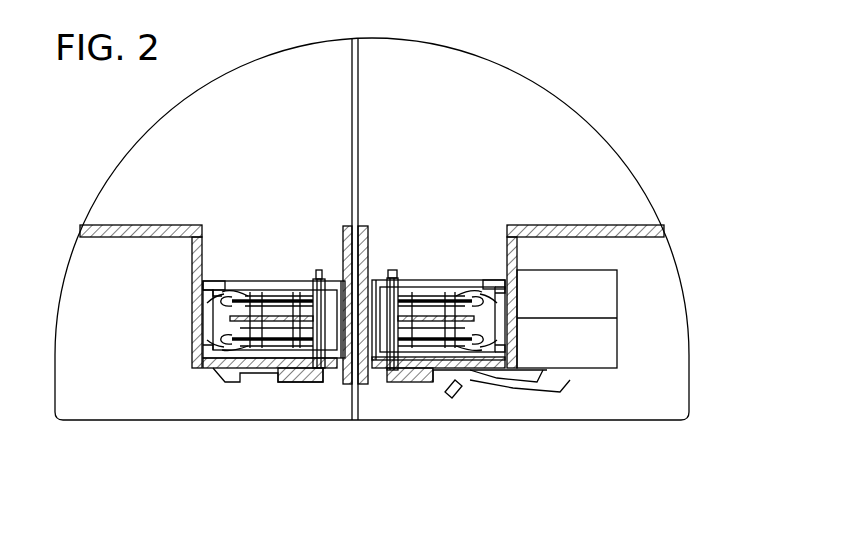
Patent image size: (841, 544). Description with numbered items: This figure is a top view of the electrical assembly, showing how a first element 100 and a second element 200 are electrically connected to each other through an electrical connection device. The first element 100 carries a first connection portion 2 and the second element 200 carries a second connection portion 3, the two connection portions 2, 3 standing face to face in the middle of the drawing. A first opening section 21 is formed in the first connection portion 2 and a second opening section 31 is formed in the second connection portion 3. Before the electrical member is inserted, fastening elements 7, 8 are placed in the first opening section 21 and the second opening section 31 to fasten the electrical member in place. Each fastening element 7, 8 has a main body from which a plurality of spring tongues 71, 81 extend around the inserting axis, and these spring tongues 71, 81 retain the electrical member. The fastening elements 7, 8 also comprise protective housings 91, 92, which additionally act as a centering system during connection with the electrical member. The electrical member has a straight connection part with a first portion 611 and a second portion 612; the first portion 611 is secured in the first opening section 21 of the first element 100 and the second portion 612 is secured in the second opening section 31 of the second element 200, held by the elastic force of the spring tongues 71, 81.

The first element 100 is at (143, 403).
The second element 200 is at (628, 405).
The first connection portion 2 is at (316, 273).
The second connection portion 3 is at (389, 271).
The fastening element 7 is at (258, 350).
The fastening element 8 is at (453, 366).
The first opening section 21 is at (332, 340).
The second opening section 31 is at (377, 340).
The spring tongues 71 is at (278, 310).
The spring tongues 81 is at (436, 310).
The protective housing 91 is at (242, 287).
The protective housing 92 is at (470, 280).
The first portion 611 is at (341, 324).
The second portion 612 is at (368, 317).